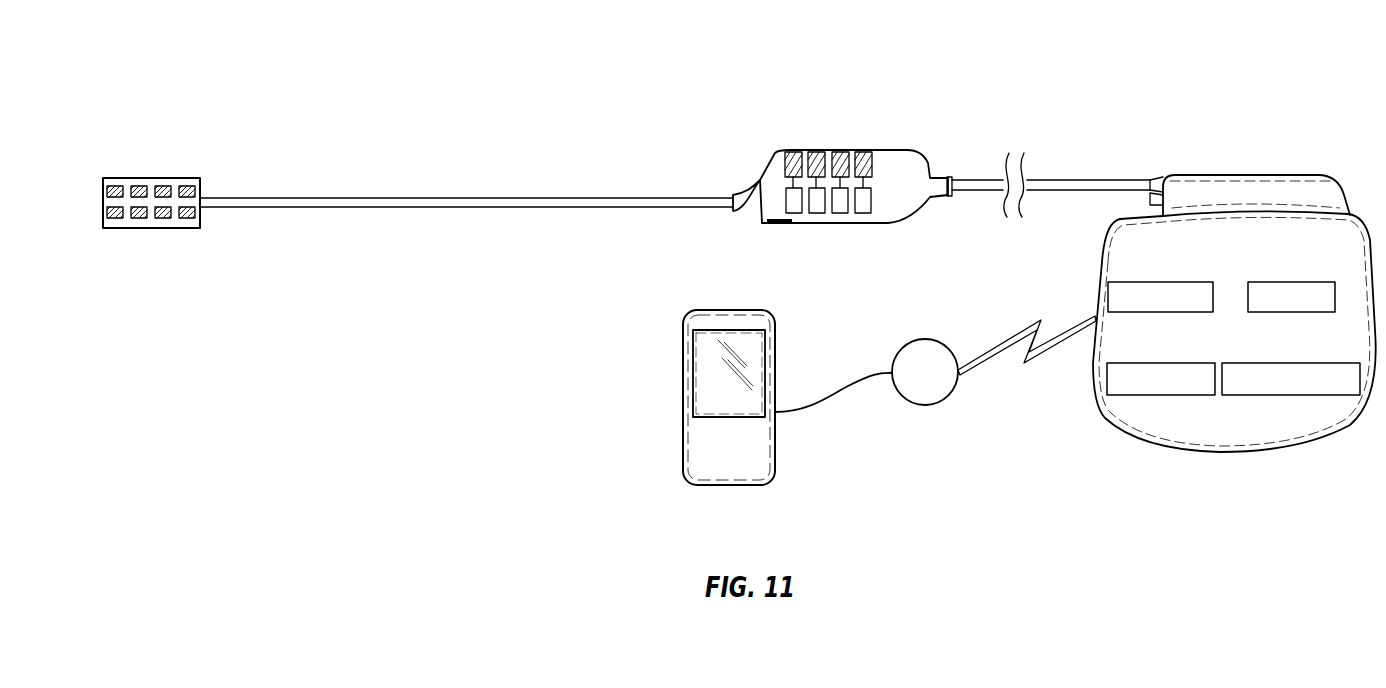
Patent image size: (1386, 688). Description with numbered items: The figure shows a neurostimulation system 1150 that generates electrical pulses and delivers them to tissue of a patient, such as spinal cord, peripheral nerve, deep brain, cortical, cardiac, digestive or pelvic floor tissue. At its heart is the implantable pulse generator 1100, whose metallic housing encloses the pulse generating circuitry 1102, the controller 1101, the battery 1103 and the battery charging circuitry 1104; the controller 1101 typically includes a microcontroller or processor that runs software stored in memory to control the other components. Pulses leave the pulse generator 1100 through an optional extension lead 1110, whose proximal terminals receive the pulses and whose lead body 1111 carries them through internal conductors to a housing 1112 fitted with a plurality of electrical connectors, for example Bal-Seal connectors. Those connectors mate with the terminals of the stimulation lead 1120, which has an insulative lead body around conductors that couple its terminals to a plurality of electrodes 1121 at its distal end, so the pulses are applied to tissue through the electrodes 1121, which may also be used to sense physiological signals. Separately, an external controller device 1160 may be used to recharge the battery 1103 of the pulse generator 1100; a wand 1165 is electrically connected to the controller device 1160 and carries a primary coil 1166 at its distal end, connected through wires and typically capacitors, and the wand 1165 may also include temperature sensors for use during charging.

The implantable pulse generator 1100 is at (1093, 457).
The controller 1101 is at (1262, 363).
The pulse generating circuitry 1102 is at (1268, 282).
The battery 1103 is at (1142, 282).
The battery charging circuitry 1104 is at (1141, 363).
The extension lead 1110 is at (972, 124).
The lead body 1111 is at (1057, 180).
The housing 1112 is at (832, 150).
The stimulation lead 1120 is at (403, 175).
The electrodes 1121 is at (153, 178).
The stimulation system 1150 is at (1280, 78).
The controller device 1160 is at (683, 380).
The wand 1165 is at (857, 380).
The coil 1166 is at (925, 405).